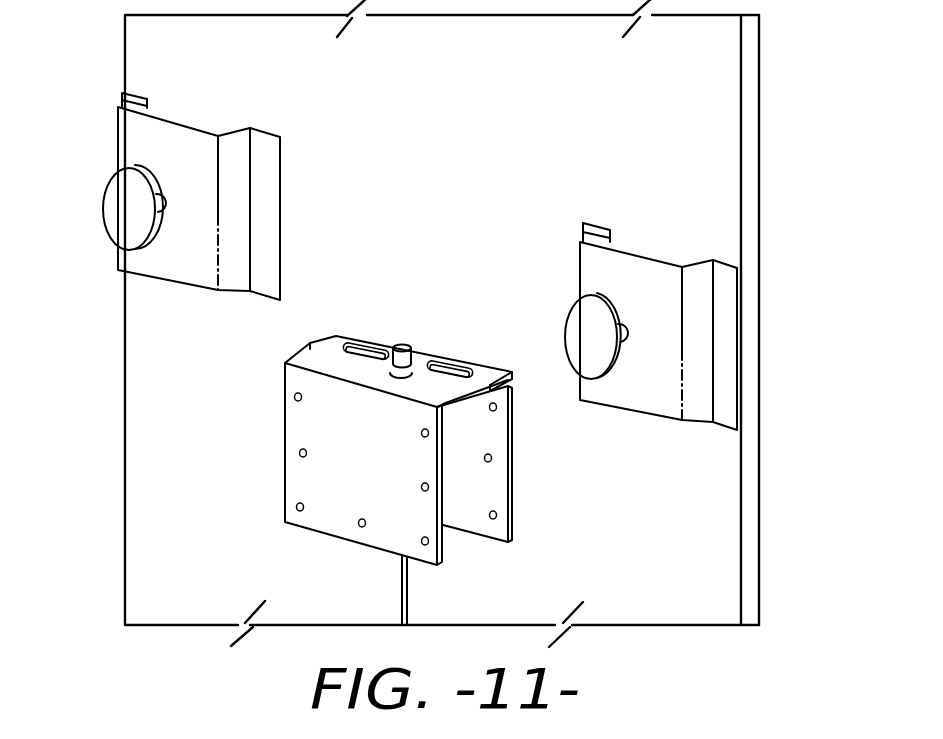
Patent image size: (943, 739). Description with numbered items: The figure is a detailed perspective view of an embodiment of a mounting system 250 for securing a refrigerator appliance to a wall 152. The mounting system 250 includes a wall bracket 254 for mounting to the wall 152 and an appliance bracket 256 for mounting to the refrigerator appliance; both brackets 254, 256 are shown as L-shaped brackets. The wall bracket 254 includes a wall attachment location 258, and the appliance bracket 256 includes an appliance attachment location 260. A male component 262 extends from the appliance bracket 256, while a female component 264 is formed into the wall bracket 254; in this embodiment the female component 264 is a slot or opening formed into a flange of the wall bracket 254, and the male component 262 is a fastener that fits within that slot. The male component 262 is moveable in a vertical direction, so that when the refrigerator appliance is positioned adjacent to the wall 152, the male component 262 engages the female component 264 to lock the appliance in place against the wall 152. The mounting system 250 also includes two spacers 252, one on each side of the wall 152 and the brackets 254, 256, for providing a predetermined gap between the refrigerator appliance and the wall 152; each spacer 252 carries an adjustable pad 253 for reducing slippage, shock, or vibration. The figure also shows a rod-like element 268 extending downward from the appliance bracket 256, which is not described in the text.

The wall 152 is at (745, 162).
The mounting system 250 is at (588, 143).
The spacer 252 is at (172, 118).
The adjustable pad 253 is at (118, 200).
The wall bracket 254 is at (512, 448).
The appliance bracket 256 is at (284, 473).
The wall attachment location 258 is at (406, 344).
The appliance attachment location 260 is at (412, 385).
The male component 262 is at (403, 343).
The female component 264 is at (432, 363).
The rod 268 is at (400, 572).